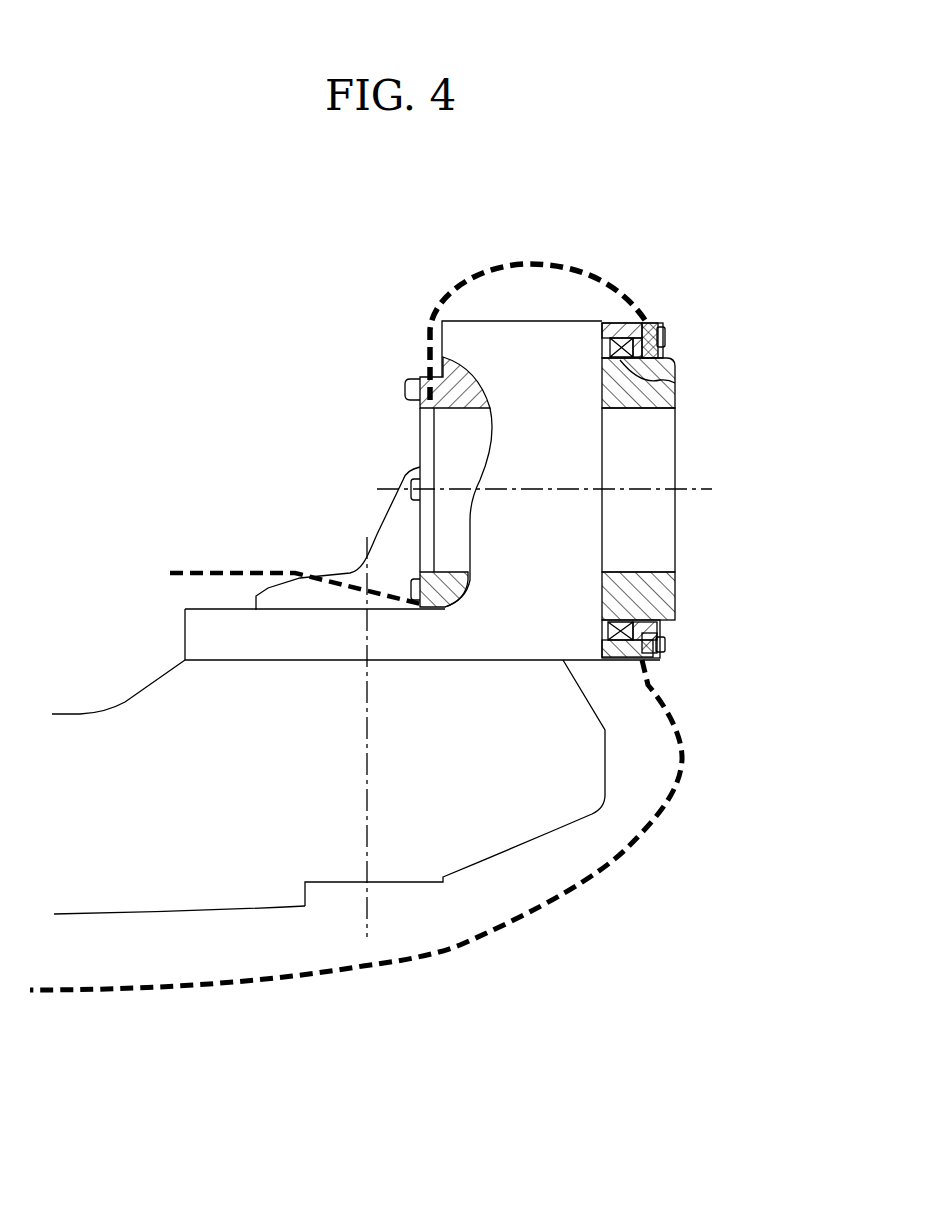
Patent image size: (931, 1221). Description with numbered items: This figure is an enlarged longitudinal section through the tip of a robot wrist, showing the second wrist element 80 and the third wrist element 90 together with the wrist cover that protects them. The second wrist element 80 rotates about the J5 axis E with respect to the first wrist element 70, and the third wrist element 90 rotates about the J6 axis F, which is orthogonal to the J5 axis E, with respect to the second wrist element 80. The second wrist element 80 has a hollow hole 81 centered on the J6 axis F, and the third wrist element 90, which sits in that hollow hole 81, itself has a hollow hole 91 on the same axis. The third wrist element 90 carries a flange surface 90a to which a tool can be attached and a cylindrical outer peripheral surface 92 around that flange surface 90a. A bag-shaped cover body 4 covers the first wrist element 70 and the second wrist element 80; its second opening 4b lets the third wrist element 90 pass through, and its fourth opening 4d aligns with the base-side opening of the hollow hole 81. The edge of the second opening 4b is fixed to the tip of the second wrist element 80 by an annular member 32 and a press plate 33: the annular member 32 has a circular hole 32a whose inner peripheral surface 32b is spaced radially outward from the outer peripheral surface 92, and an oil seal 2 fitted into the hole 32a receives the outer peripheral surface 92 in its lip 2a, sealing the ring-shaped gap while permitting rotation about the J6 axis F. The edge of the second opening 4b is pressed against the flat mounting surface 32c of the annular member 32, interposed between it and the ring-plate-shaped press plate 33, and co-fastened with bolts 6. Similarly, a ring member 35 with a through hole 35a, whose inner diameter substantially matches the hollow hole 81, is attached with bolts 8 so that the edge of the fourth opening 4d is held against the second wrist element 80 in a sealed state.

The oil seal 2 is at (603, 347).
The lip 2a is at (676, 366).
The cover body 4 is at (391, 664).
The second opening 4b is at (652, 665).
The fourth opening 4d is at (432, 348).
The bolts 6 is at (665, 644).
The bolts 8 is at (412, 392).
The annular member 32 is at (630, 326).
The hole 32a is at (600, 356).
The inner peripheral surface 32b is at (603, 345).
The mounting surface 32c is at (652, 324).
The press plate 33 is at (665, 333).
The ring member 35 is at (430, 377).
The through hole 35a is at (427, 418).
The first wrist element 70 is at (217, 925).
The second wrist element 80 is at (185, 634).
The hollow hole 81 is at (455, 572).
The third wrist element 90 is at (693, 514).
The flange surface 90a is at (678, 578).
The hollow hole 91 is at (647, 413).
The outer peripheral surface 92 is at (602, 637).
The J5 axis E is at (367, 812).
The J6 axis F is at (552, 490).